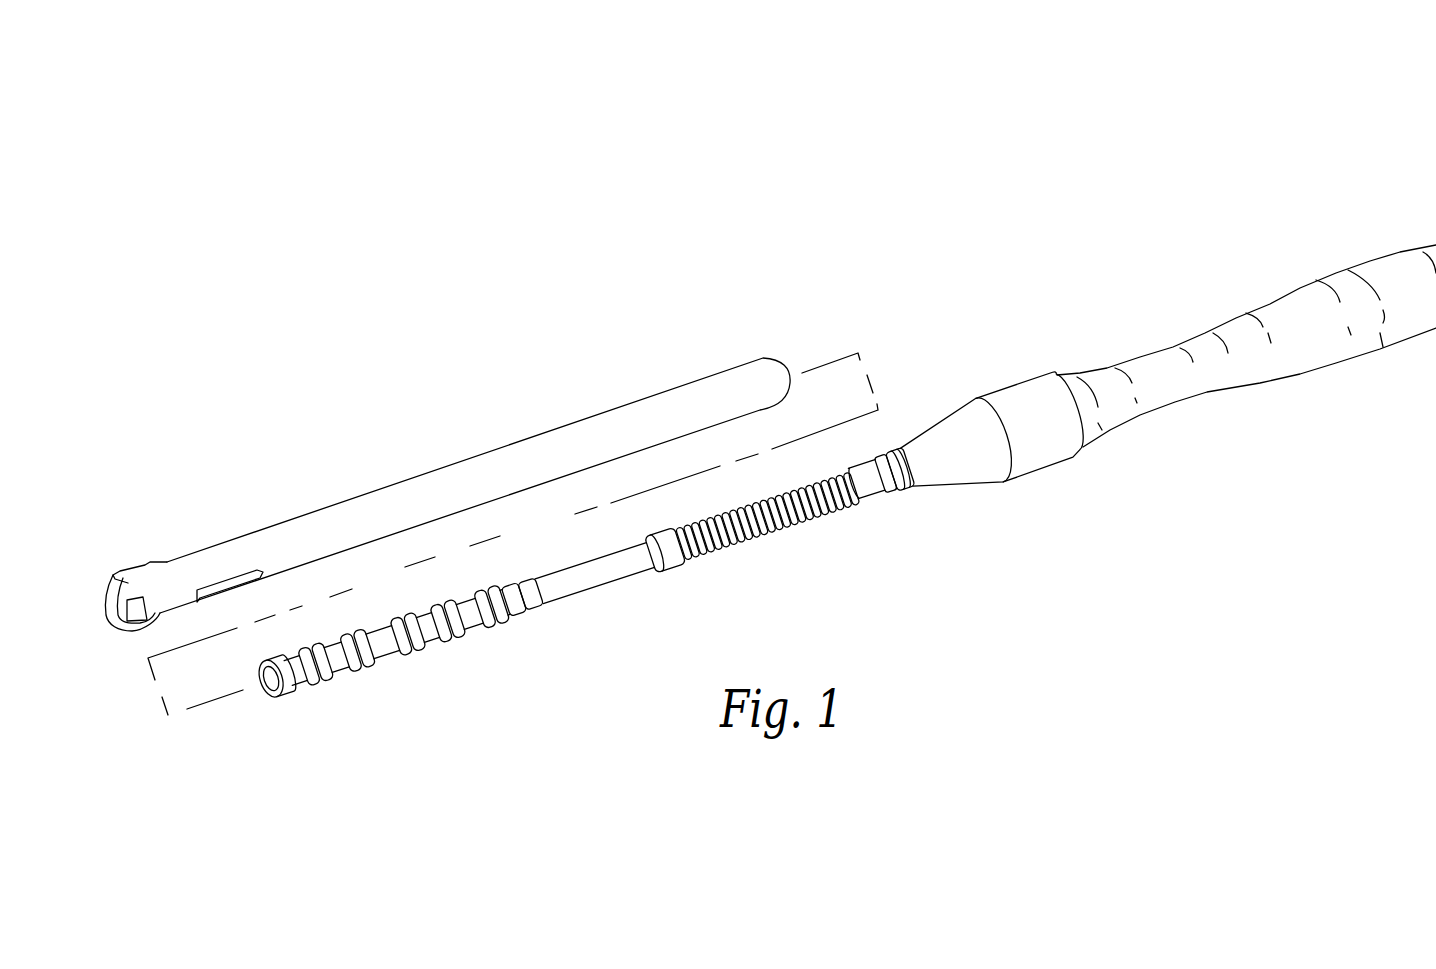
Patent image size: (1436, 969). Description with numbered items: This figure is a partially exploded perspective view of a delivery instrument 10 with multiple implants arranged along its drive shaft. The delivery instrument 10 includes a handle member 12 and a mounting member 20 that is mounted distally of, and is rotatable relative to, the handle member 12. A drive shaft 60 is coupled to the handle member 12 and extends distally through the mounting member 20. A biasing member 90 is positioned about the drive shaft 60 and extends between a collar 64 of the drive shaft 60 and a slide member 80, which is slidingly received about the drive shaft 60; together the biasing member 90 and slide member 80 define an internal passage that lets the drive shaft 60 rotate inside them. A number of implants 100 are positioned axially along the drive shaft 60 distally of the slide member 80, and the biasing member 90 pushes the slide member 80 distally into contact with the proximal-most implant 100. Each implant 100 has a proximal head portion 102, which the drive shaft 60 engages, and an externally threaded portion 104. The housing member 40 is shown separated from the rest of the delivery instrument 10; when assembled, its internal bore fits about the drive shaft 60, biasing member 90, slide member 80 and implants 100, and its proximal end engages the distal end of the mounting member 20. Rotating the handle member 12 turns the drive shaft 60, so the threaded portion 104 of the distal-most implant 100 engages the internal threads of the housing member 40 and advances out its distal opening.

The delivery instrument 10 is at (992, 341).
The handle member 12 is at (1228, 400).
The mounting member 20 is at (1042, 470).
The housing member 40 is at (415, 432).
The drive shaft 60 is at (746, 538).
The collar 64 is at (873, 492).
The slide member 80 is at (598, 589).
The biasing member 90 is at (818, 512).
The implants 100 is at (421, 657).
The head portion 102 is at (309, 693).
The threaded portion 104 is at (284, 699).